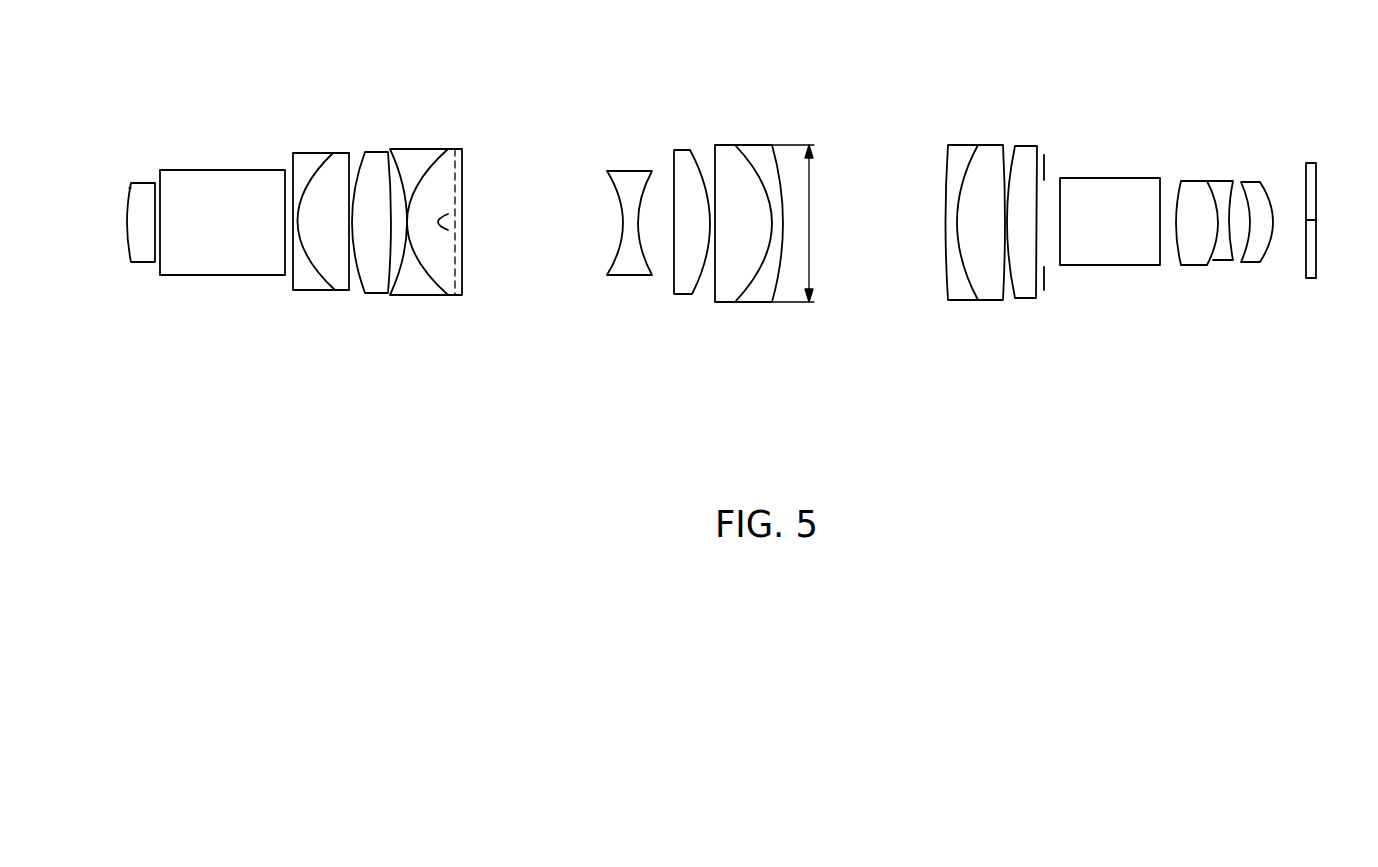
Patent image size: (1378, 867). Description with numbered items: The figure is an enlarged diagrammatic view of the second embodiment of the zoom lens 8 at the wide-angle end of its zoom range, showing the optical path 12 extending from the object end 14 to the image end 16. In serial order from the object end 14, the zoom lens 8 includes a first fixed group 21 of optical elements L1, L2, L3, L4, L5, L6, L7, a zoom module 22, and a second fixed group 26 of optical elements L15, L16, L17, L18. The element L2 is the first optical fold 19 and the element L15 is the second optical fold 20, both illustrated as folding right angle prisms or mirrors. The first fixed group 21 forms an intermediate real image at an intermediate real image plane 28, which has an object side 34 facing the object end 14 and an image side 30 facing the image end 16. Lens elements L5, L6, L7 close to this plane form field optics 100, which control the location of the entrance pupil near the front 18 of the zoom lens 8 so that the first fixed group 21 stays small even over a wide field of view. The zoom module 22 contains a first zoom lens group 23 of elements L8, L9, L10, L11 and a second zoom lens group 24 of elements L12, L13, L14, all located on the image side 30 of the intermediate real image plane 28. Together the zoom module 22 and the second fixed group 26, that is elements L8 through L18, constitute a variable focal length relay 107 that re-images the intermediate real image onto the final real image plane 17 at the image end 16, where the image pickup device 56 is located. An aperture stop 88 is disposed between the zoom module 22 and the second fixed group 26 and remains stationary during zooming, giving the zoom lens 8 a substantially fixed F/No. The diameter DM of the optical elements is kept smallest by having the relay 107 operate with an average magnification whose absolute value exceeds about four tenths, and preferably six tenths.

The zoom lens 8 is at (574, 356).
The optical path 12 is at (562, 234).
The object end 14 is at (118, 236).
The image end 16 is at (1343, 256).
The final real image plane 17 is at (1311, 220).
The front of the zoom lens 18 is at (126, 186).
The first optical fold 19 is at (243, 170).
The second optical fold 20 is at (1101, 178).
The first fixed group 21 is at (462, 358).
The zoom module 22 is at (1048, 80).
The first zoom lens group 23 is at (782, 132).
The second zoom lens group 24 is at (1040, 138).
The second fixed group 26 is at (1275, 318).
The intermediate real image plane 28 is at (458, 138).
The image side 30 is at (458, 176).
The object side 34 is at (450, 260).
The image pickup device 56 is at (1314, 276).
The aperture stop 88 is at (1048, 165).
The field optics 100 is at (467, 137).
The variable focal length relay 107 is at (1318, 380).
The smallest diameter of the optical elements DM is at (800, 223).
The optical element L1 is at (141, 183).
The optical element L2 is at (213, 170).
The optical element L3 is at (312, 153).
The optical element L4 is at (333, 290).
The optical element L5 is at (375, 293).
The optical element L6 is at (417, 295).
The optical element L7 is at (453, 295).
The optical element L8 is at (627, 276).
The optical element L9 is at (683, 294).
The optical element L10 is at (725, 302).
The optical element L11 is at (752, 302).
The optical element L12 is at (958, 300).
The optical element L13 is at (985, 300).
The optical element L14 is at (1038, 290).
The optical element L15 is at (1128, 265).
The optical element L16 is at (1193, 265).
The optical element L17 is at (1218, 260).
The optical element L18 is at (1252, 182).